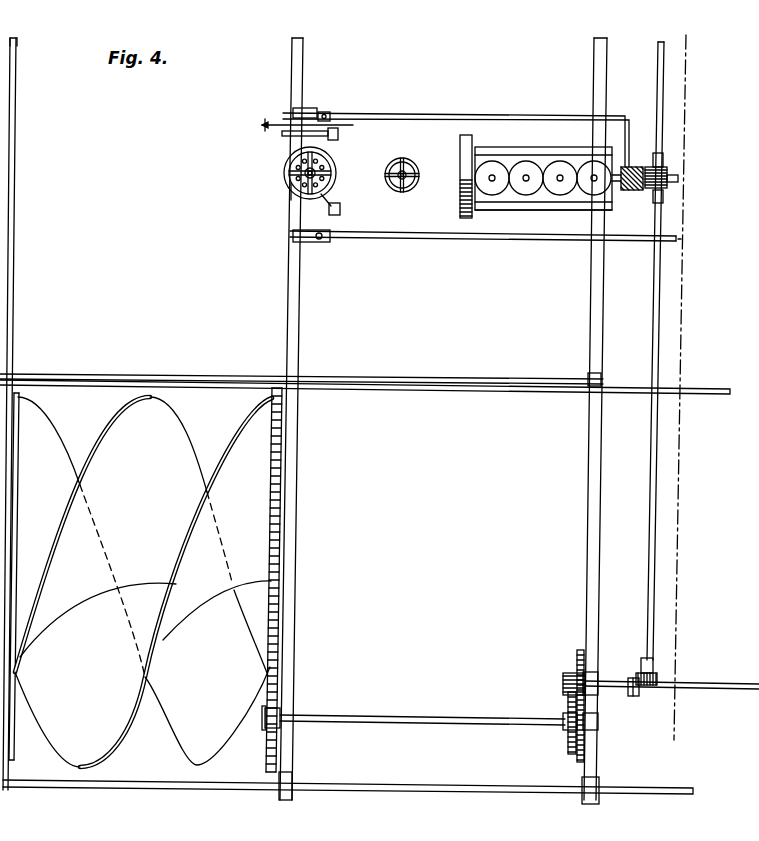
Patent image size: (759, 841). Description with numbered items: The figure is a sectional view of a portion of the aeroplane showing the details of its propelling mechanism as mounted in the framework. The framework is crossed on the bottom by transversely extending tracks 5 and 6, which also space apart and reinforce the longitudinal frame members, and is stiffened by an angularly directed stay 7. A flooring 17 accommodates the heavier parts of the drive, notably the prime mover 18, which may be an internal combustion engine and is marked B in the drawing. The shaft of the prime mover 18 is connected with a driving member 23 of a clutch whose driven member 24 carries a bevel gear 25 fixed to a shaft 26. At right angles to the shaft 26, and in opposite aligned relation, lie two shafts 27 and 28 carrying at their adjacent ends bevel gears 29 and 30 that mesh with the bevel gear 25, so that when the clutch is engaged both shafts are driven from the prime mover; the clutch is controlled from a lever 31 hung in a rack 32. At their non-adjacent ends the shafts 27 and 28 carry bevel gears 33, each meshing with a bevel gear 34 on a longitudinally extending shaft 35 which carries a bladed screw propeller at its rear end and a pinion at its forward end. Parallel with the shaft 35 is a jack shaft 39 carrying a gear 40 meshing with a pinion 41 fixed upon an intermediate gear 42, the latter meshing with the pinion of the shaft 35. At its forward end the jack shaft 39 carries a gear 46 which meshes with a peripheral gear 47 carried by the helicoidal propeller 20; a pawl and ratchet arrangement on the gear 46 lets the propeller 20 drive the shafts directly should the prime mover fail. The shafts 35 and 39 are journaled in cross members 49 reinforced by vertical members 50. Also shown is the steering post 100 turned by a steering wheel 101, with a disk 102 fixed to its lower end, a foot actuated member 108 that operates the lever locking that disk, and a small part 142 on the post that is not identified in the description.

The track 5 is at (305, 125).
The track 6 is at (592, 613).
The stay 7 is at (682, 40).
The flooring 17 is at (515, 419).
The prime mover 18 is at (543, 196).
The helicoidal propeller 20 is at (250, 474).
The driving member 23 is at (628, 197).
The driven member 24 is at (633, 167).
The bevel gear 25 is at (647, 188).
The shaft 26 is at (678, 180).
The shaft 27 is at (665, 104).
The shaft 28 is at (663, 218).
The bevel gear 29 is at (664, 168).
The bevel gear 30 is at (523, 116).
The lever 31 is at (331, 116).
The rack 32 is at (312, 109).
The bevel gear 33 is at (658, 678).
The bevel gear 34 is at (638, 698).
The shaft 35 is at (742, 693).
The jack shaft 39 is at (418, 718).
The gear 40 is at (567, 751).
The pinion 41 is at (563, 680).
The intermediate gear 42 is at (575, 668).
The gear 46 is at (283, 708).
The peripheral gear 47 is at (277, 537).
The cross member 49 is at (597, 413).
The vertical member 50 is at (300, 372).
The post 100 is at (291, 136).
The steering wheel 101 is at (284, 173).
The disk 102 is at (288, 192).
The foot actuated member 108 is at (341, 209).
The lug 142 is at (338, 138).
The motor B is at (536, 197).